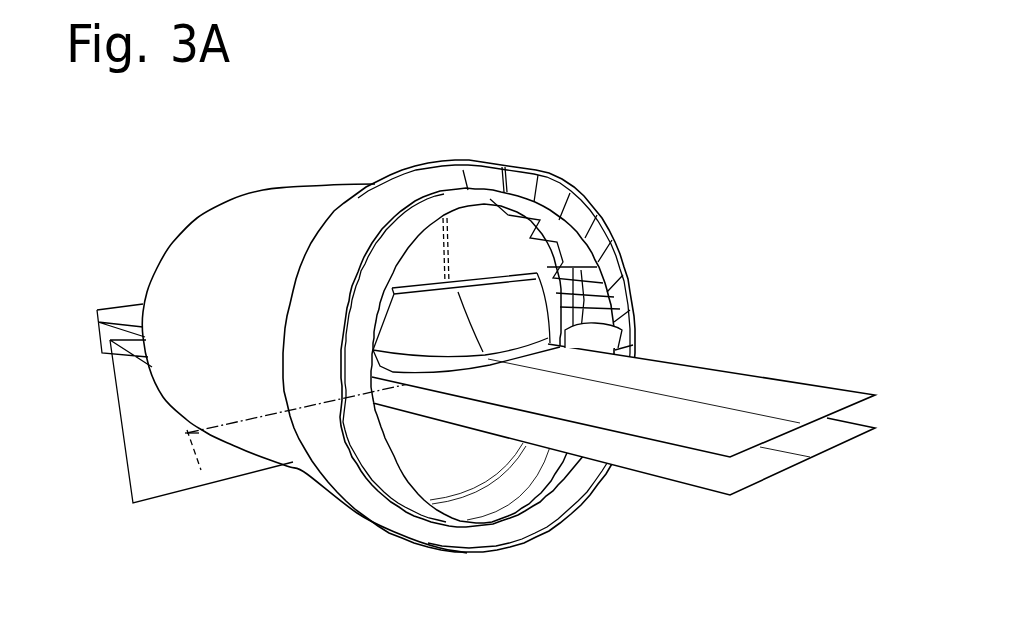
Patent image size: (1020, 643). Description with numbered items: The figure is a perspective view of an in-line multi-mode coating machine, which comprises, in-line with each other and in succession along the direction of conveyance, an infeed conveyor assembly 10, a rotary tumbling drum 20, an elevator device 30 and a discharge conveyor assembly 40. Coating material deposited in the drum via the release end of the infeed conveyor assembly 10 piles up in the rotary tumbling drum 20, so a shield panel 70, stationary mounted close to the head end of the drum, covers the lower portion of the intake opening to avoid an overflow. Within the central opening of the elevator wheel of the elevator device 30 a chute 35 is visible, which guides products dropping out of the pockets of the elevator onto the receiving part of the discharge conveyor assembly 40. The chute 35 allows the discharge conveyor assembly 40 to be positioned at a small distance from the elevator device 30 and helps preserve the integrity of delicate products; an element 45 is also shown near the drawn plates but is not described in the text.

The infeed conveyor assembly 10 is at (124, 299).
The rotary tumbling drum 20 is at (308, 176).
The elevator device 30 is at (535, 158).
The chute 35 is at (430, 328).
The discharge conveyor assembly 40 is at (679, 359).
The strap 45 is at (632, 324).
The shield panel 70 is at (150, 476).